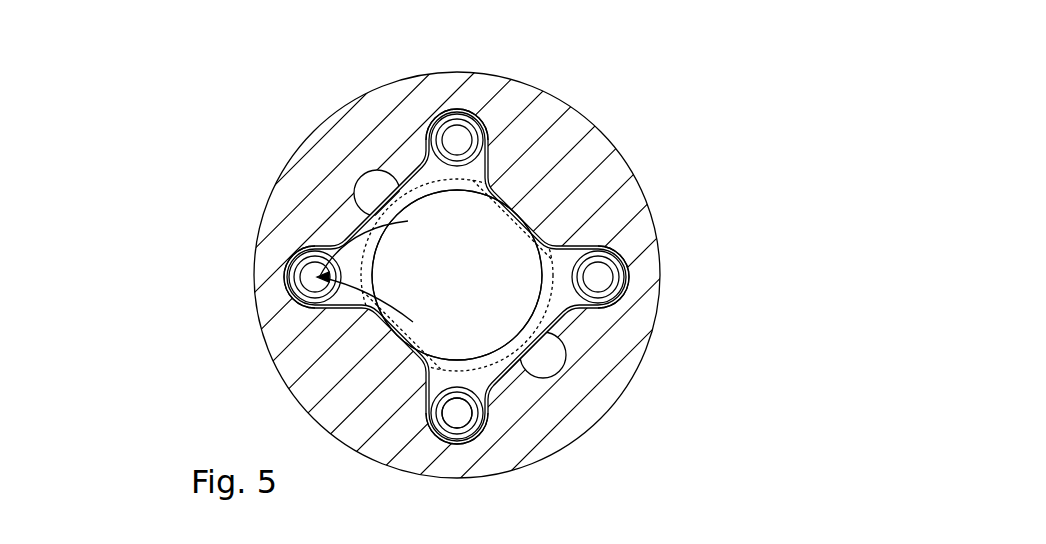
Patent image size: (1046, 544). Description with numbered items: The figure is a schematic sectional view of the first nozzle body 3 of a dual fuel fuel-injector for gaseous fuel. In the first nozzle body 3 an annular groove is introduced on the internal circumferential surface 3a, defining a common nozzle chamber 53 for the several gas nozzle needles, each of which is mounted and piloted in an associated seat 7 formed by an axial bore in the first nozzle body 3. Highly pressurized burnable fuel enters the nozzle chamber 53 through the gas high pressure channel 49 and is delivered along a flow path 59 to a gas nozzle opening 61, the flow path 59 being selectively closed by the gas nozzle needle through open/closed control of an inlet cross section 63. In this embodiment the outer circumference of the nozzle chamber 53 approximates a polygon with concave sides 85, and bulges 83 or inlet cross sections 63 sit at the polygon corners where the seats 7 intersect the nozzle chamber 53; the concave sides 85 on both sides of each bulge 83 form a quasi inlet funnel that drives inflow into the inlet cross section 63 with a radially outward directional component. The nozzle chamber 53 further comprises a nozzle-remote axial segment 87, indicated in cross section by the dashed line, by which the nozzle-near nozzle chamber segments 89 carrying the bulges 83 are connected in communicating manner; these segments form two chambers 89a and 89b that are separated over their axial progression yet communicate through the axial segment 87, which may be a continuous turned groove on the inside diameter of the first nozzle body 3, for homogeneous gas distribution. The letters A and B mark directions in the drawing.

The first nozzle body 3 is at (325, 152).
The internal circumferential surface 3a is at (372, 273).
The seat 7 is at (468, 122).
The gas high pressure channel 49 is at (370, 192).
The nozzle chamber 53 is at (433, 177).
The flow path 59 is at (457, 418).
The gas nozzle opening 61 is at (310, 268).
The inlet cross section 63 is at (457, 133).
The bulge 83 is at (487, 122).
The concave side 85 is at (412, 170).
The axial segment 87 is at (505, 218).
The nozzle chamber segment 89 is at (489, 373).
The chamber 89a is at (355, 243).
The chamber 89b is at (557, 310).
The rotation direction A is at (376, 301).
The rotation direction B is at (371, 244).